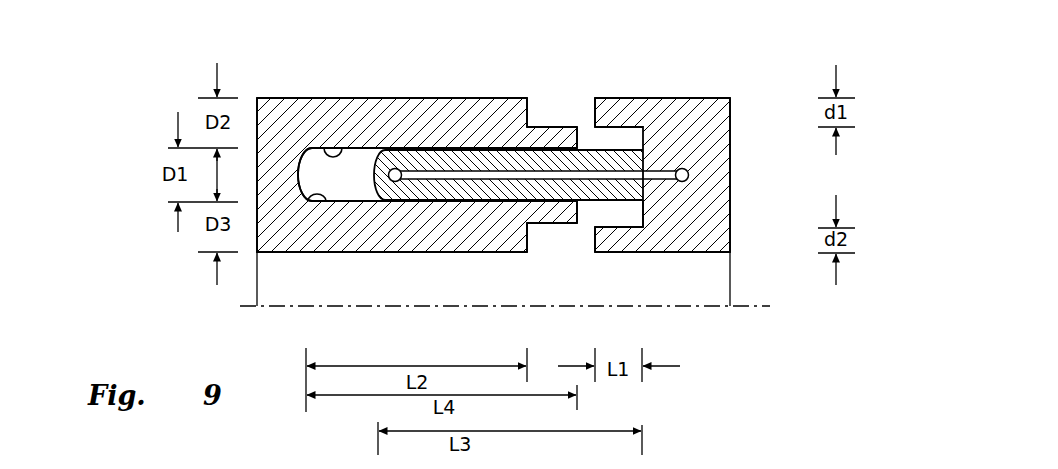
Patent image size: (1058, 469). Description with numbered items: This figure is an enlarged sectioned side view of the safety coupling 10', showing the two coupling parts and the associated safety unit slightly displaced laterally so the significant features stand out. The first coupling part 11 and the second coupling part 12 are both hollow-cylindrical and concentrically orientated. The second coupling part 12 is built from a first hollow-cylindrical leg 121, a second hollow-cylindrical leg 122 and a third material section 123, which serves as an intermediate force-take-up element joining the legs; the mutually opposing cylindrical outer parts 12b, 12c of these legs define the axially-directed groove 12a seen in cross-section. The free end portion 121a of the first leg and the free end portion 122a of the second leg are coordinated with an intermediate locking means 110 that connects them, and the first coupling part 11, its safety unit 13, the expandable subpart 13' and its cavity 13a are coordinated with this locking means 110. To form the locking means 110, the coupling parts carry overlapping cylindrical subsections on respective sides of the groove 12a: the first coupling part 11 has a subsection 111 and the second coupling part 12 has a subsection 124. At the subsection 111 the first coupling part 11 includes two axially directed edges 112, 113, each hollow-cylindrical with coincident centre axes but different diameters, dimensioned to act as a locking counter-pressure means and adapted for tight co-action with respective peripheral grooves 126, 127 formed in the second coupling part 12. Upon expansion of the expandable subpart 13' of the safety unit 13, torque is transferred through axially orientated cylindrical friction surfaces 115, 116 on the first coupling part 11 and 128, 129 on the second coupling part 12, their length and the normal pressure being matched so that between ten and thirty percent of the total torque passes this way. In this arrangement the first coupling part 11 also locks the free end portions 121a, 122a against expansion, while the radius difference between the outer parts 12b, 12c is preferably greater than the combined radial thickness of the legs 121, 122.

The safety coupling 10' is at (395, 63).
The first coupling part 11 is at (699, 92).
The second coupling part 12 is at (283, 97).
The axially-directed groove 12a is at (362, 183).
The cylindrical outer part 12b is at (324, 147).
The cylindrical outer part 12c is at (309, 204).
The safety unit 13 is at (607, 110).
The expandable subpart 13' is at (427, 102).
The cavity 13a is at (453, 160).
The intermediate locking means 110 is at (714, 203).
The subsection 111 is at (687, 253).
The edge 112 is at (610, 225).
The edge 113 is at (608, 97).
The friction surface 115 is at (630, 128).
The friction surface 116 is at (631, 256).
The first hollow-cylindrical leg 121 is at (397, 139).
The free end portion 121a is at (548, 120).
The second hollow-cylindrical leg 122 is at (362, 247).
The free end portion 122a is at (561, 237).
The third material section 123 is at (285, 163).
The subsection 124 is at (630, 242).
The peripheral groove 126 is at (536, 122).
The peripheral groove 127 is at (552, 225).
The friction surface 128 is at (568, 126).
The friction surface 129 is at (563, 213).